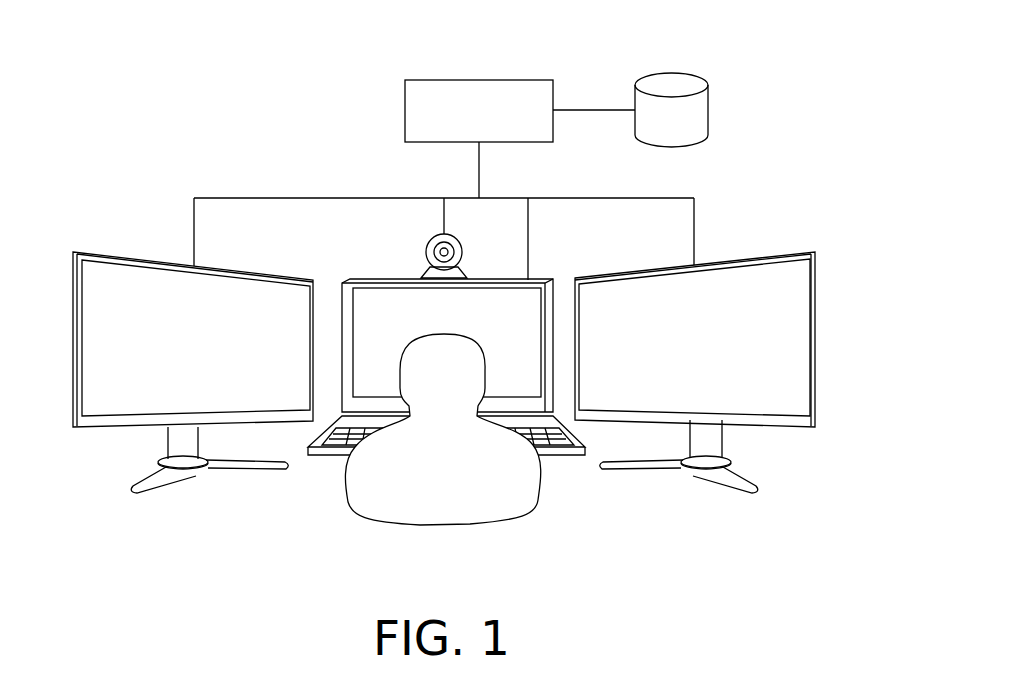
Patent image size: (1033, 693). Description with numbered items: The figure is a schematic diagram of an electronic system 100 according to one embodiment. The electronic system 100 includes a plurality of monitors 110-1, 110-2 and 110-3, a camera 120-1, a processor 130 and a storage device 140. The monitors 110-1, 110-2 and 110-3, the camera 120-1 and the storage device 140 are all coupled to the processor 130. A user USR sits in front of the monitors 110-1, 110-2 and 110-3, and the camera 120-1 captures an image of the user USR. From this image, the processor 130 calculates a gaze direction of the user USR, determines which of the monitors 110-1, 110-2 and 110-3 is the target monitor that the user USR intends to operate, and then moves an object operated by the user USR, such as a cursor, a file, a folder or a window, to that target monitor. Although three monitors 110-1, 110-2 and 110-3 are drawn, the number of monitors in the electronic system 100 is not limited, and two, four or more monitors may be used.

The electronic system 100 is at (184, 140).
The monitor 110-1 is at (532, 280).
The monitor 110-2 is at (142, 257).
The monitor 110-3 is at (750, 258).
The camera 120-1 is at (428, 245).
The processor 130 is at (479, 80).
The storage device 140 is at (671, 73).
The user USR is at (540, 493).